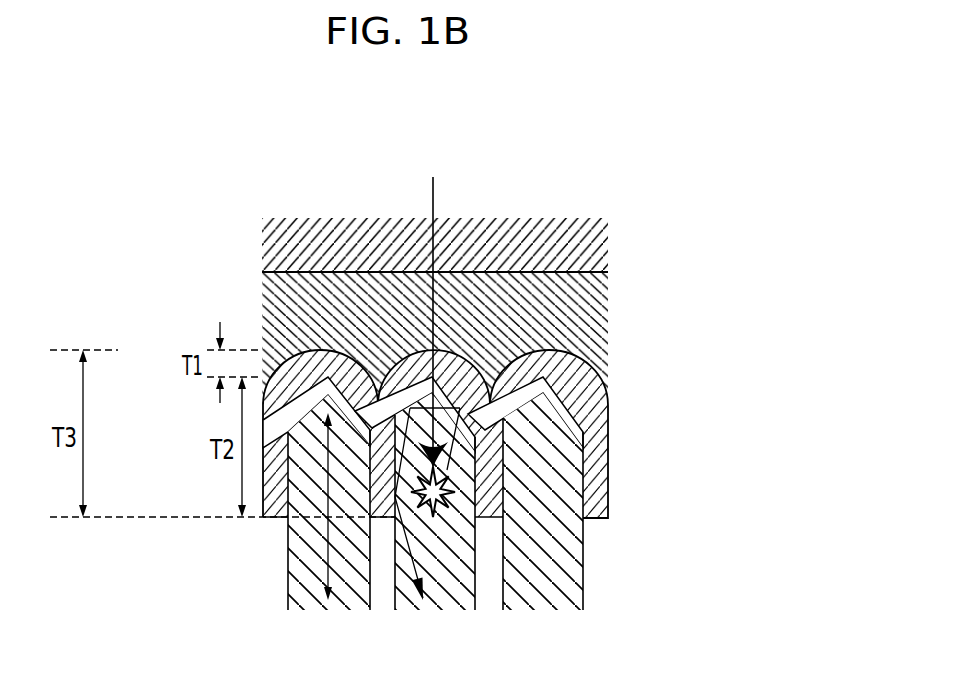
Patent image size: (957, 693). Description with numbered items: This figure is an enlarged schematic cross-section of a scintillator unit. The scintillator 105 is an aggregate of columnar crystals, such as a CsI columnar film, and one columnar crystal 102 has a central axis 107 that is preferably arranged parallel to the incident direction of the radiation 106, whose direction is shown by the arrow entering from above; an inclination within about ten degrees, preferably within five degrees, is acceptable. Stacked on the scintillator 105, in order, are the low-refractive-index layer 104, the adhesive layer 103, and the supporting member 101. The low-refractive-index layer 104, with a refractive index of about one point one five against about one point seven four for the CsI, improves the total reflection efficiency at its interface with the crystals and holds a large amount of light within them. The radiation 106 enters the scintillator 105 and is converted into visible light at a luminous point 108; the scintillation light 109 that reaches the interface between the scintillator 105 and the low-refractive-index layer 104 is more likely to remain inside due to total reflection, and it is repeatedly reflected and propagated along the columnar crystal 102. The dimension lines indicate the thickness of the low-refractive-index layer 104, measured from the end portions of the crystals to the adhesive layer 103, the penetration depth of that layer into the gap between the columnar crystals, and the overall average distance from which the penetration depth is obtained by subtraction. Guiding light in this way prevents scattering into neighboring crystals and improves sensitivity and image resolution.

The supporting member 101 is at (598, 250).
The columnar crystal 102 is at (565, 465).
The adhesive layer 103 is at (598, 290).
The low-refractive-index layer 104 is at (574, 392).
The scintillator 105 is at (565, 565).
The radiation 106 is at (434, 329).
The central axis 107 is at (328, 565).
The luminous point 108 is at (440, 515).
The scintillation light 109 is at (419, 586).